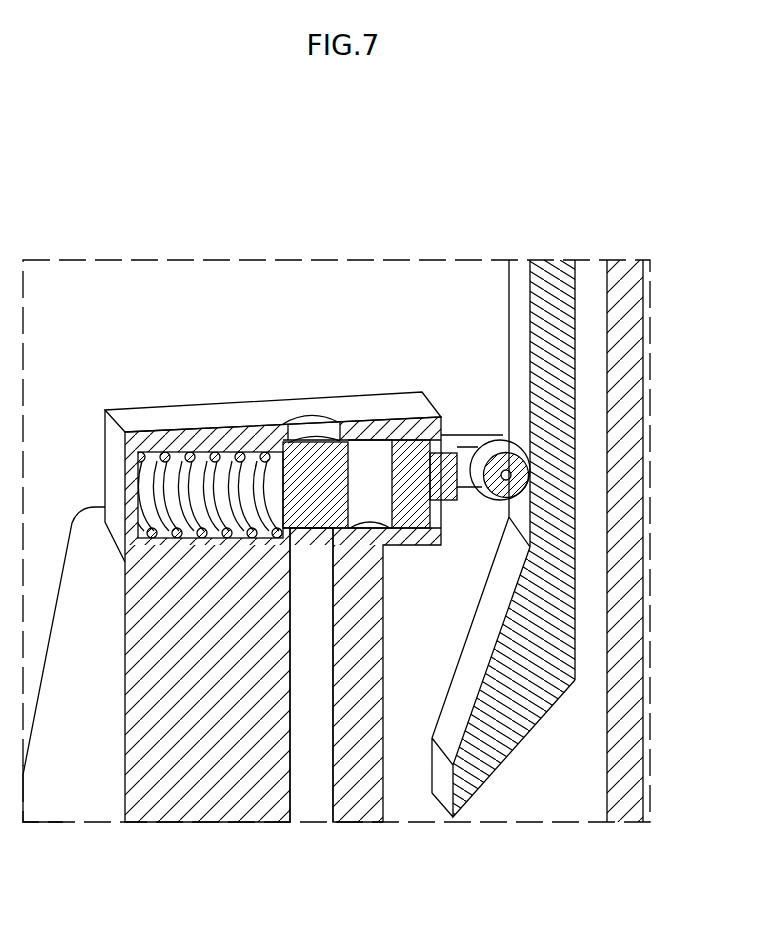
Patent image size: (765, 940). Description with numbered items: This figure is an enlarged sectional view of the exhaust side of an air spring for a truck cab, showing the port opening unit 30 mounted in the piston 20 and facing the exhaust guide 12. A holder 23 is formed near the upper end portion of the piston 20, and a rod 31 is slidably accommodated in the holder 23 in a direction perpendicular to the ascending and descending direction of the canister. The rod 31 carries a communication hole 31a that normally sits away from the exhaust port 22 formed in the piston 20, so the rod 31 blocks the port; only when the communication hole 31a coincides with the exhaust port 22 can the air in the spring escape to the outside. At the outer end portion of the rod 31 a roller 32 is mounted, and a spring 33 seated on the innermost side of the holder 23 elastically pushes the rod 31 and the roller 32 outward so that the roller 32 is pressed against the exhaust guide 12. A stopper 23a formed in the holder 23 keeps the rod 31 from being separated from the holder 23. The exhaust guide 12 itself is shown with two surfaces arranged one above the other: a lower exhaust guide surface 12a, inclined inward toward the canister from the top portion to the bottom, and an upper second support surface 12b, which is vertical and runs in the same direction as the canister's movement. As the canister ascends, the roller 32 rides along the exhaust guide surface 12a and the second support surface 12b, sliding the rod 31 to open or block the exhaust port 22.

The exhaust guide 12 is at (562, 413).
The exhaust guide surface 12a is at (490, 623).
The second support surface 12b is at (518, 303).
The piston 20 is at (195, 793).
The exhaust port 22 is at (302, 782).
The holder 23 is at (168, 440).
The stopper 23a is at (451, 490).
The port opening unit 30 is at (222, 323).
The rod 31 is at (313, 455).
The communication hole 31a is at (377, 460).
The roller 32 is at (502, 452).
The spring 33 is at (248, 435).